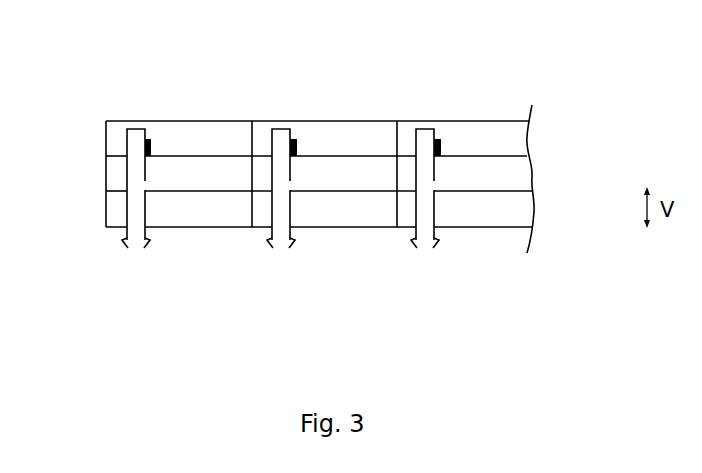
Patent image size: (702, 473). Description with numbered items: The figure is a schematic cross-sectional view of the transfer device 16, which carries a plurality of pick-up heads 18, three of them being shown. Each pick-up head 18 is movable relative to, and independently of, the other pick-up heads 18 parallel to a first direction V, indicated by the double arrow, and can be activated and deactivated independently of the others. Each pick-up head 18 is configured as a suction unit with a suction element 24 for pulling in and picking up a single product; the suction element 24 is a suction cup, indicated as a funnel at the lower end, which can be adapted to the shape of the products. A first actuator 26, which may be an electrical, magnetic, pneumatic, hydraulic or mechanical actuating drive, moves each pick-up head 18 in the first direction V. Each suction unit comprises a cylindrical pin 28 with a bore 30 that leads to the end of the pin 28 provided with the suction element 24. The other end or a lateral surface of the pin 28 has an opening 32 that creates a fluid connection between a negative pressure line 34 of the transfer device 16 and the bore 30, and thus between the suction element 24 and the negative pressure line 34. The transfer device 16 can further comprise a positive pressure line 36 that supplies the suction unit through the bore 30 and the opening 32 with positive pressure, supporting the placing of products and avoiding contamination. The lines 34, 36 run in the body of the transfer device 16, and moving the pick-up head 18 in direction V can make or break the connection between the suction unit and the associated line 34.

The transfer device 16 is at (584, 127).
The pick-up head 18 is at (105, 242).
The suction element 24 is at (128, 249).
The first actuator 26 is at (150, 139).
The cylindrical pin 28 is at (127, 147).
The bore 30 is at (135, 222).
The opening 32 is at (145, 180).
The negative pressure line 34 is at (181, 165).
The positive pressure line 36 is at (205, 212).